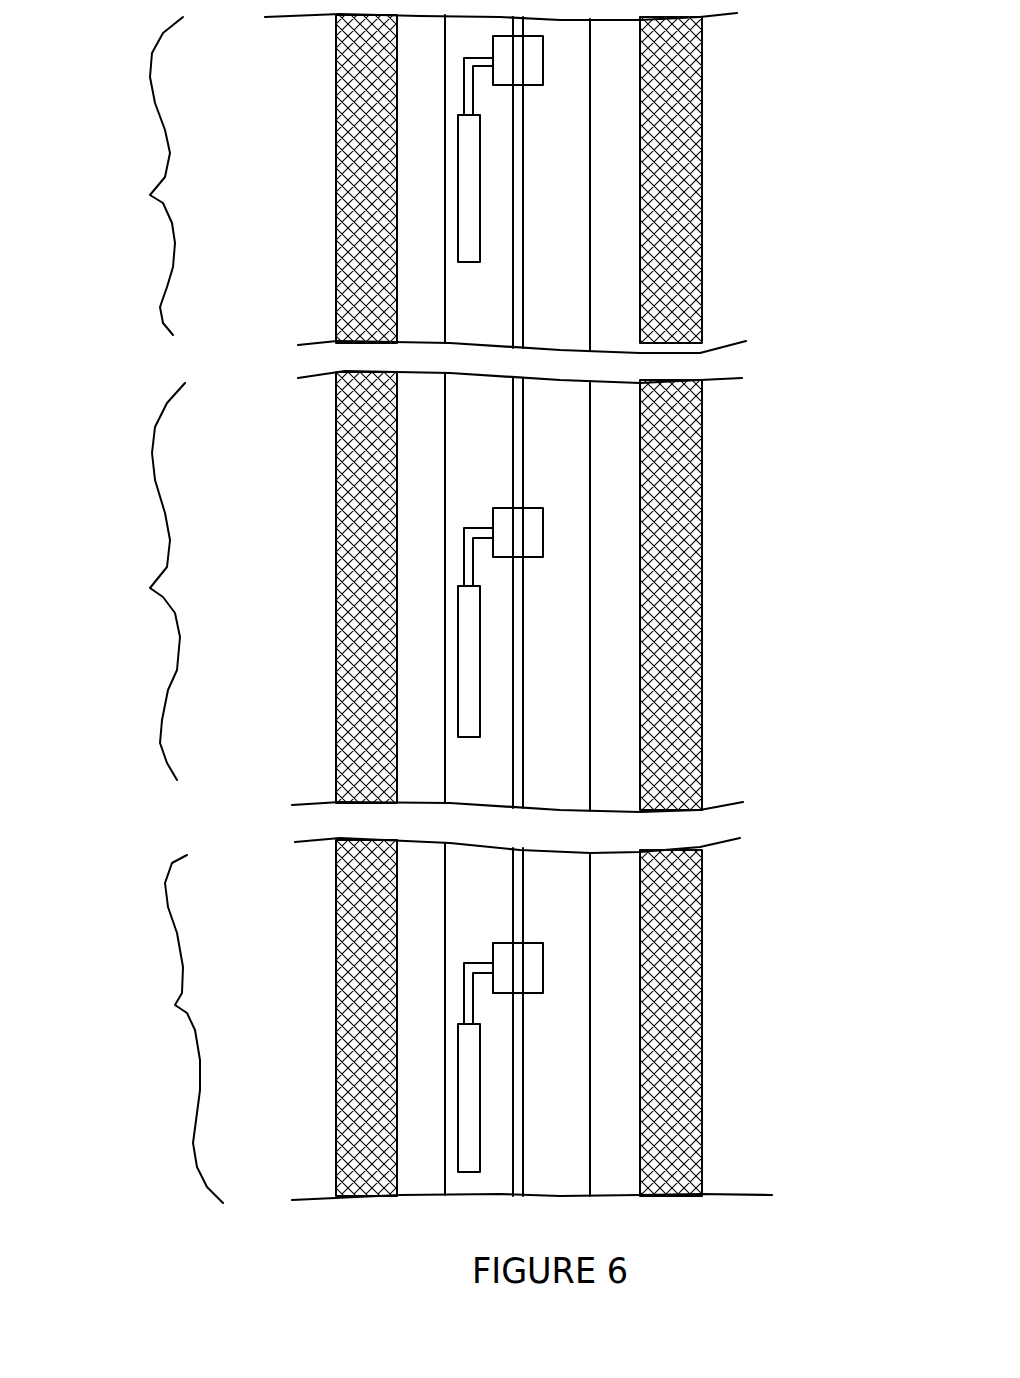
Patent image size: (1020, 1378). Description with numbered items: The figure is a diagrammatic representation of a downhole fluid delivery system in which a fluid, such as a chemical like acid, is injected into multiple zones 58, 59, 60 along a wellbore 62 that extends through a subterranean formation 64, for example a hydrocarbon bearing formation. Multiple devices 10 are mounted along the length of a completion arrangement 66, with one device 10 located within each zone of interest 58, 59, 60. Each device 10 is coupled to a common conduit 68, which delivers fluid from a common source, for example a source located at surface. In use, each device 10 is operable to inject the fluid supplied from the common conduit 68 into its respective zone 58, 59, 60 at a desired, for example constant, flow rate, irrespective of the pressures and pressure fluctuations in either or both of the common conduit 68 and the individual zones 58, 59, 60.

The device 10 is at (470, 150).
The zone 58 is at (114, 176).
The zone 59 is at (122, 581).
The zone 60 is at (147, 1029).
The wellbore 62 is at (640, 462).
The subterranean formation 64 is at (841, 592).
The completion arrangement 66 is at (583, 156).
The common conduit 68 is at (527, 237).